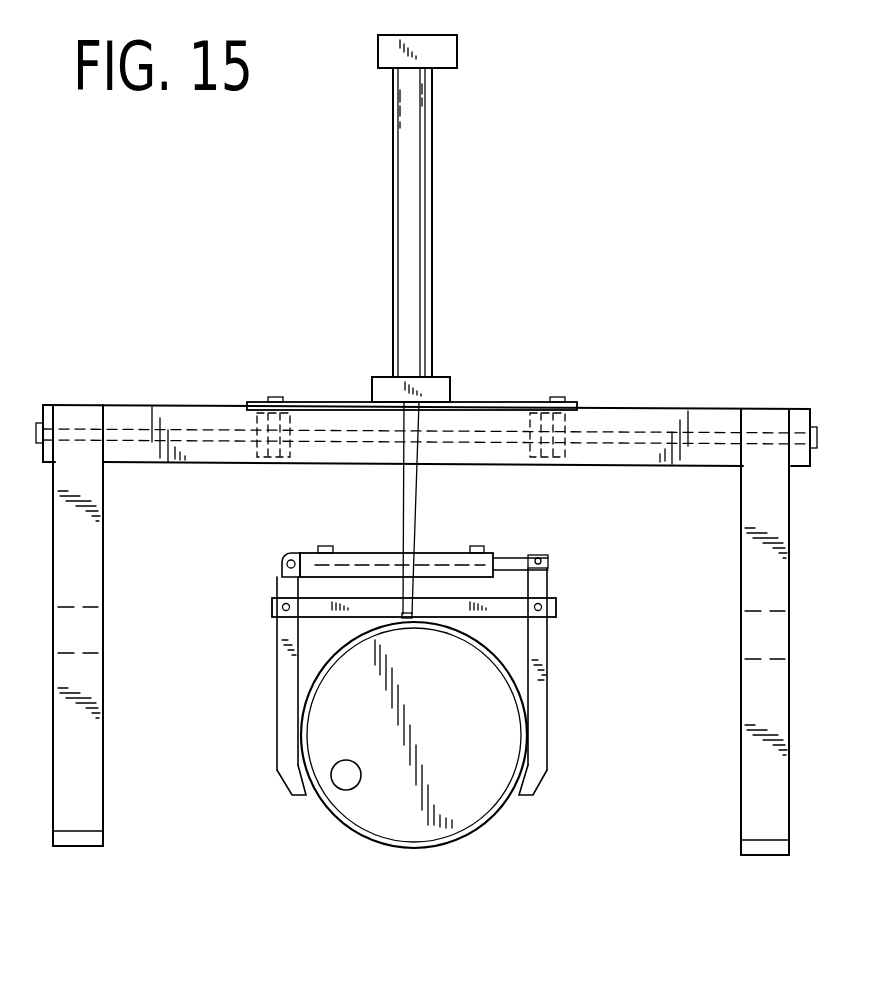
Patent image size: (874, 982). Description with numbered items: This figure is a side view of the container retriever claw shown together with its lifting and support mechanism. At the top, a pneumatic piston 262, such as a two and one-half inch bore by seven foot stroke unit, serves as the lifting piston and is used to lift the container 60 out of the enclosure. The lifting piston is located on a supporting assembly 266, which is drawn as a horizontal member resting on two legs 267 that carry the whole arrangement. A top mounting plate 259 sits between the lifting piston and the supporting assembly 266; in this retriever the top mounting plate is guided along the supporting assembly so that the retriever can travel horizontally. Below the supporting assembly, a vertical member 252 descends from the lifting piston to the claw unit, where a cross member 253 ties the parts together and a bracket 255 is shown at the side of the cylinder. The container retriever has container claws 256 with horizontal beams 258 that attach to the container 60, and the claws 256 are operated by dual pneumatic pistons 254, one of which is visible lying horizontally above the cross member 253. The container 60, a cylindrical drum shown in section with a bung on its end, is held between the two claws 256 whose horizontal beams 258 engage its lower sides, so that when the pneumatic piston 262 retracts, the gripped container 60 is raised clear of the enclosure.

The container 60 is at (478, 826).
The vertical shaft 252 is at (417, 492).
The cross bar 253 is at (556, 605).
The dual pneumatic pistons 254 is at (352, 550).
The bracket 255 is at (510, 558).
The container claws 256 is at (278, 686).
The horizontal beams 258 is at (320, 795).
The top mounting plate 259 is at (490, 402).
The pneumatic piston 262 is at (433, 190).
The supporting assembly 266 is at (680, 407).
The legs 267 is at (105, 510).